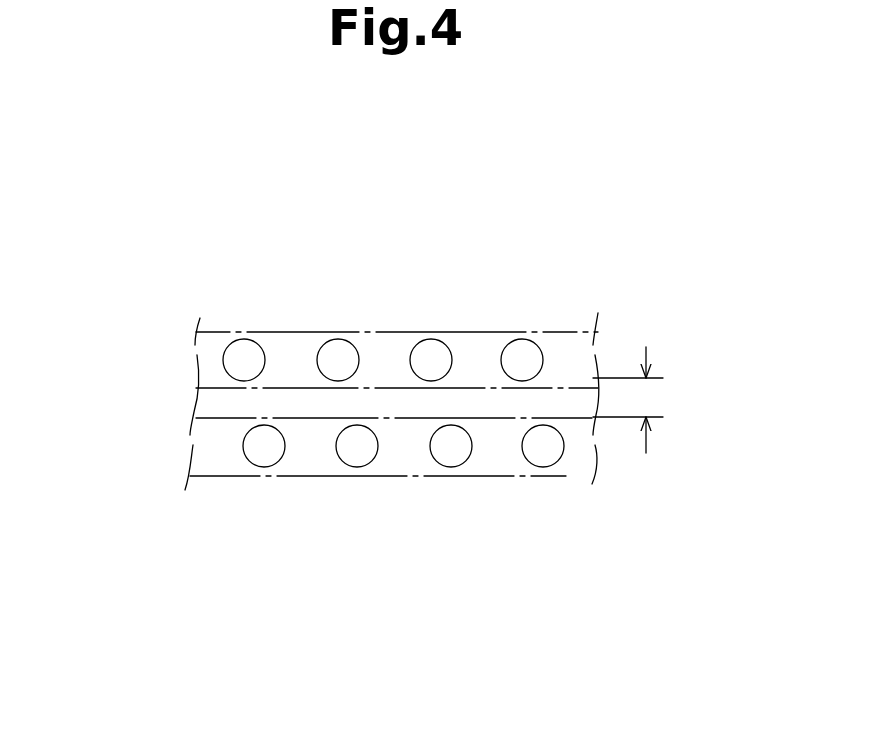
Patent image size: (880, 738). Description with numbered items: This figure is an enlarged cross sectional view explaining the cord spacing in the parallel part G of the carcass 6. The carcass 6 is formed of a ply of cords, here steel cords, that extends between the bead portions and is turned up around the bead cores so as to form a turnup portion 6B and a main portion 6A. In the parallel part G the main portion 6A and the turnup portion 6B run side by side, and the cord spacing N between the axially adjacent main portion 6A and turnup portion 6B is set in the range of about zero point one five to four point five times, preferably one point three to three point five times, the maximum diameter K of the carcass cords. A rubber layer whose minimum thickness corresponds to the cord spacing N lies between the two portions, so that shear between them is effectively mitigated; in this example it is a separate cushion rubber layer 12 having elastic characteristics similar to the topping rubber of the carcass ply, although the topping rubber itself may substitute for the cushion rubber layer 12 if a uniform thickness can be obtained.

The parallel part G is at (681, 282).
The carcass 6 is at (416, 412).
The main portion 6A is at (558, 326).
The turnup portion 6B is at (568, 476).
The cushion rubber layer 12 is at (215, 401).
The maximum diameter of the carcass cords K is at (403, 377).
The cord spacing N is at (647, 400).